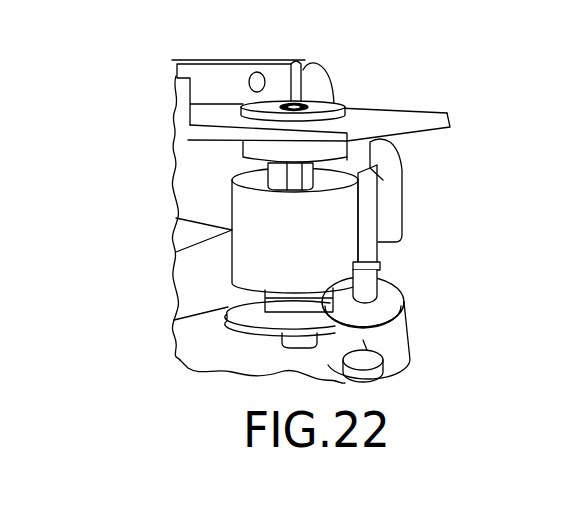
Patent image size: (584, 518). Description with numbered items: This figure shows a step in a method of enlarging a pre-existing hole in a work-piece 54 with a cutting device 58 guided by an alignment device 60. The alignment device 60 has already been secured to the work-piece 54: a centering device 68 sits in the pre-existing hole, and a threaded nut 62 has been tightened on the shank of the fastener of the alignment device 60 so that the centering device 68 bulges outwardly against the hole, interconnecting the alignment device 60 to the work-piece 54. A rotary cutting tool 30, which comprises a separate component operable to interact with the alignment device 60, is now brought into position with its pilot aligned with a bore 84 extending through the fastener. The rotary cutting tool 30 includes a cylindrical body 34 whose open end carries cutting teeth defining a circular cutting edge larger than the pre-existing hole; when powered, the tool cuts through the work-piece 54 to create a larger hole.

The cutting device 58 is at (147, 153).
The alignment device 60 is at (243, 80).
The bore 84 is at (306, 103).
The centering device 68 is at (337, 108).
The work-piece 54 is at (443, 112).
The rotary cutting tool 30 is at (247, 226).
The threaded nut 62 is at (303, 170).
The cylindrical body 34 is at (265, 271).